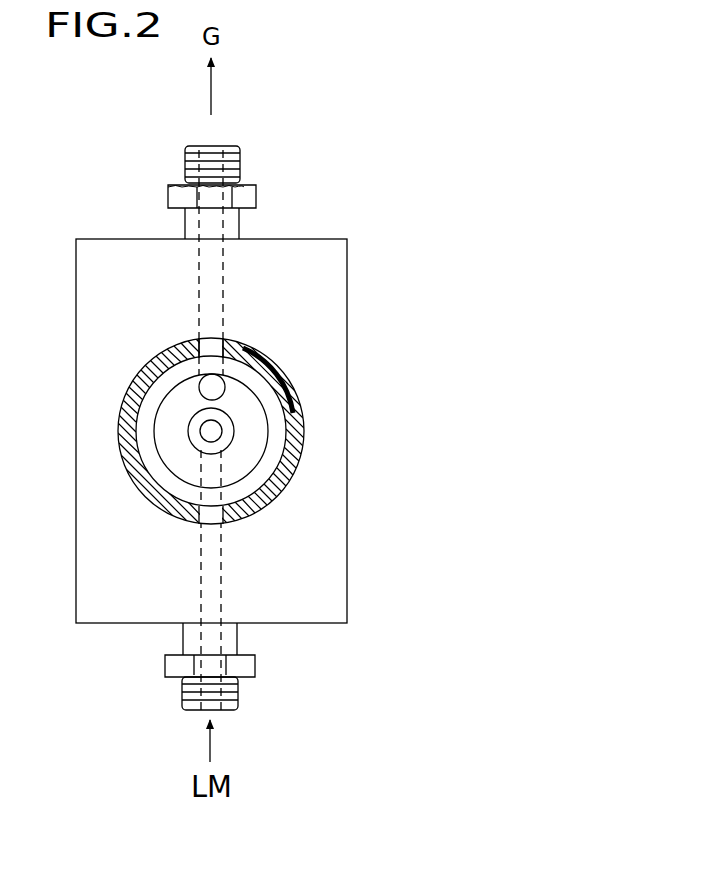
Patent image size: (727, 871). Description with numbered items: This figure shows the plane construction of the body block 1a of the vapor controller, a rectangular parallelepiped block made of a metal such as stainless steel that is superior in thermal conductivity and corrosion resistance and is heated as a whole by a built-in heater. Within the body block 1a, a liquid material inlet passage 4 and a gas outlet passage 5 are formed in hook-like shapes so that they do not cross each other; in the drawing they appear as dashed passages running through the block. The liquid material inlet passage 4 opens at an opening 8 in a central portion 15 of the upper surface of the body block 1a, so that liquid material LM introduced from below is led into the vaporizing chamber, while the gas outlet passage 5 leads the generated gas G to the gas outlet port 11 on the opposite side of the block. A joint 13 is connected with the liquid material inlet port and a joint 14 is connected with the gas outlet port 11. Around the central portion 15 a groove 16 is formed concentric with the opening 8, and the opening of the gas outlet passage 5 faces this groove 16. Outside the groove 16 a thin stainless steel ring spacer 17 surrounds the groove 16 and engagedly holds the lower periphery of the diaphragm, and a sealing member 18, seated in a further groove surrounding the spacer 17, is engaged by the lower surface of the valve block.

The body block 1a is at (348, 497).
The liquid material inlet passage 4 is at (222, 573).
The gas outlet passage 5 is at (224, 298).
The opening of the liquid material inlet passage 8 is at (199, 433).
The gas outlet port 11 is at (215, 239).
The joint 13 is at (238, 697).
The joint 14 is at (240, 161).
The central portion 15 is at (190, 447).
The groove 16 is at (170, 417).
The ring spacer 17 is at (276, 422).
The sealing member 18 is at (137, 390).